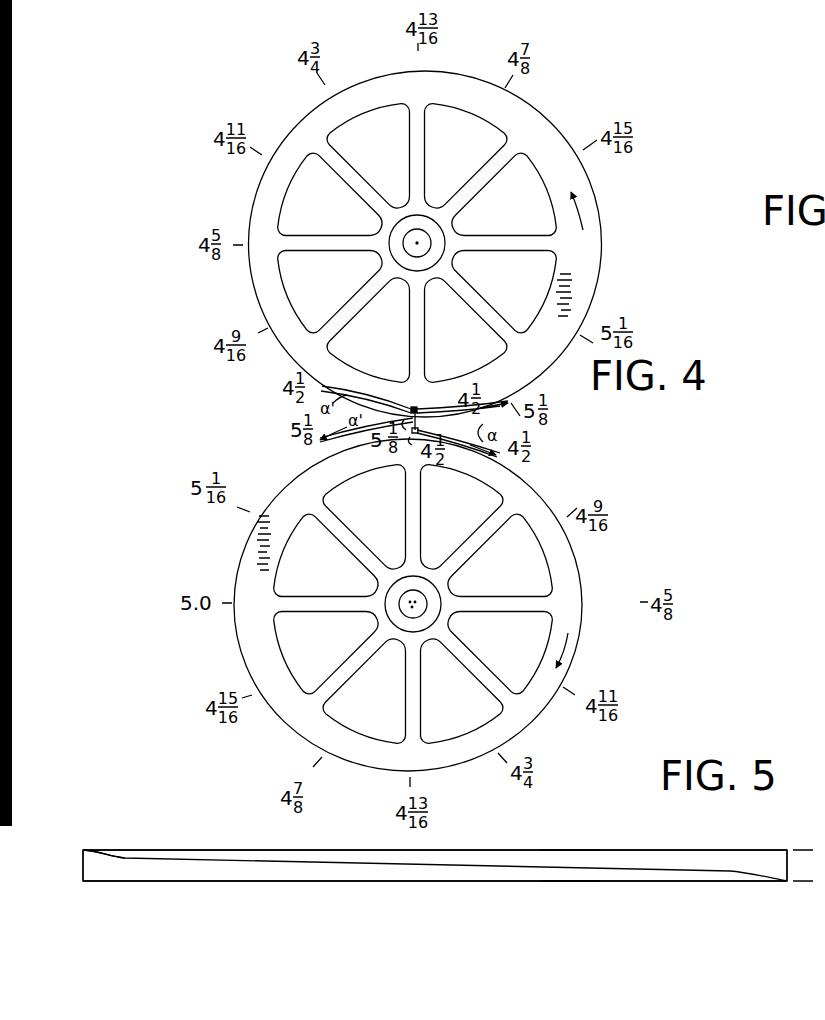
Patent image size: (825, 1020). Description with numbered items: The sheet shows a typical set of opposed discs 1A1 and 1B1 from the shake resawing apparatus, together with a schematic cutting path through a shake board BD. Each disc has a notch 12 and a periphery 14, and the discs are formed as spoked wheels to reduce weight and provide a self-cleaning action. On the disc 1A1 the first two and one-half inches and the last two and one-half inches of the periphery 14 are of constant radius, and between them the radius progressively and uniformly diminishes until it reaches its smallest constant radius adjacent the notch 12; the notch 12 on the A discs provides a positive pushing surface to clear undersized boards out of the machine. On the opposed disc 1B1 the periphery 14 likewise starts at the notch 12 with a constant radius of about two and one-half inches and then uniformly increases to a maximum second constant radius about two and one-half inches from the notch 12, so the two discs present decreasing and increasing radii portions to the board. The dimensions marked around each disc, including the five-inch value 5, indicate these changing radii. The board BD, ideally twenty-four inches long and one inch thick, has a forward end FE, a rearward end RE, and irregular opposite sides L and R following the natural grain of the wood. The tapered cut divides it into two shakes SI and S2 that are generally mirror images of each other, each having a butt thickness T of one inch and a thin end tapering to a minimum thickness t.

In FIG. 4, the disc 1A1 is at (537, 118).
In FIG. 4, the disc 1B1 is at (580, 608).
In FIG. 4, the periphery 14 is at (598, 233).
In FIG. 4, the wheel diameter 5 is at (603, 247).
In FIG. 4, the notch 12 is at (412, 408).
In FIG. 5, the board BD is at (632, 849).
In FIG. 5, the left side L is at (462, 852).
In FIG. 5, the right side R is at (462, 882).
In FIG. 5, the shake SI is at (563, 850).
In FIG. 5, the shake S2 is at (568, 881).
In FIG. 5, the rearward end RE is at (83, 882).
In FIG. 5, the forward end FE is at (787, 850).
In FIG. 5, the thickness T is at (805, 838).
In FIG. 5, the thickness t is at (93, 866).